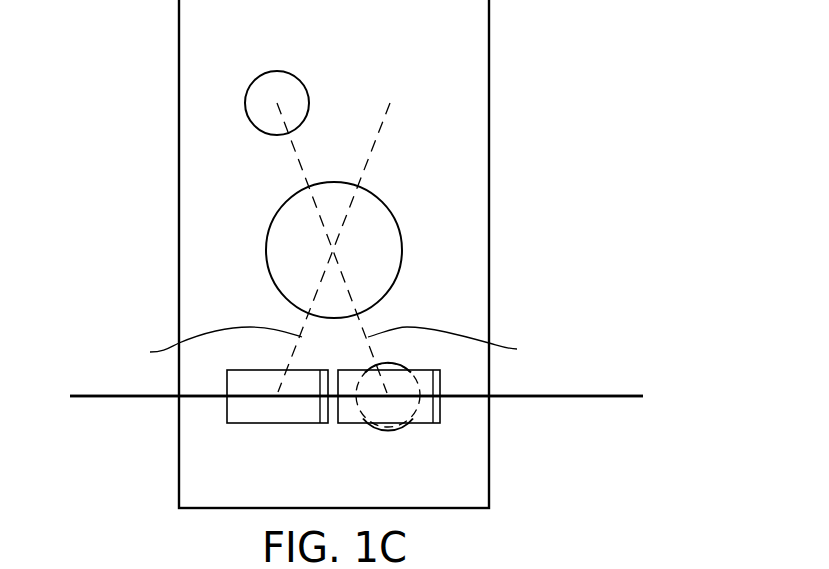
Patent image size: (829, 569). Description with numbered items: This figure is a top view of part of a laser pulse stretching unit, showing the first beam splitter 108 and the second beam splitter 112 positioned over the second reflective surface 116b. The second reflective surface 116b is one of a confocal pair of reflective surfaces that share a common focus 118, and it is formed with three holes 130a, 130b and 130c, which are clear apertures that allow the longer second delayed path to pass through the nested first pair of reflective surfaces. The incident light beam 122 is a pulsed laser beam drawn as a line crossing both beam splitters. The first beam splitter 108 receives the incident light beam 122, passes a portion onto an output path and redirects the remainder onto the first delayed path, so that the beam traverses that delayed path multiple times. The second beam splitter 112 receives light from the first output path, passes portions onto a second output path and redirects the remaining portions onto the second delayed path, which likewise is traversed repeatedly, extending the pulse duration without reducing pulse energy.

The second reflective surface 116b is at (179, 52).
The common focus 118 is at (328, 250).
The hole 130c is at (305, 88).
The hole 130b is at (398, 221).
The hole 130a is at (380, 427).
The incident light beam 122 is at (103, 398).
The first beam splitter 108 is at (242, 425).
The second beam splitter 112 is at (420, 425).